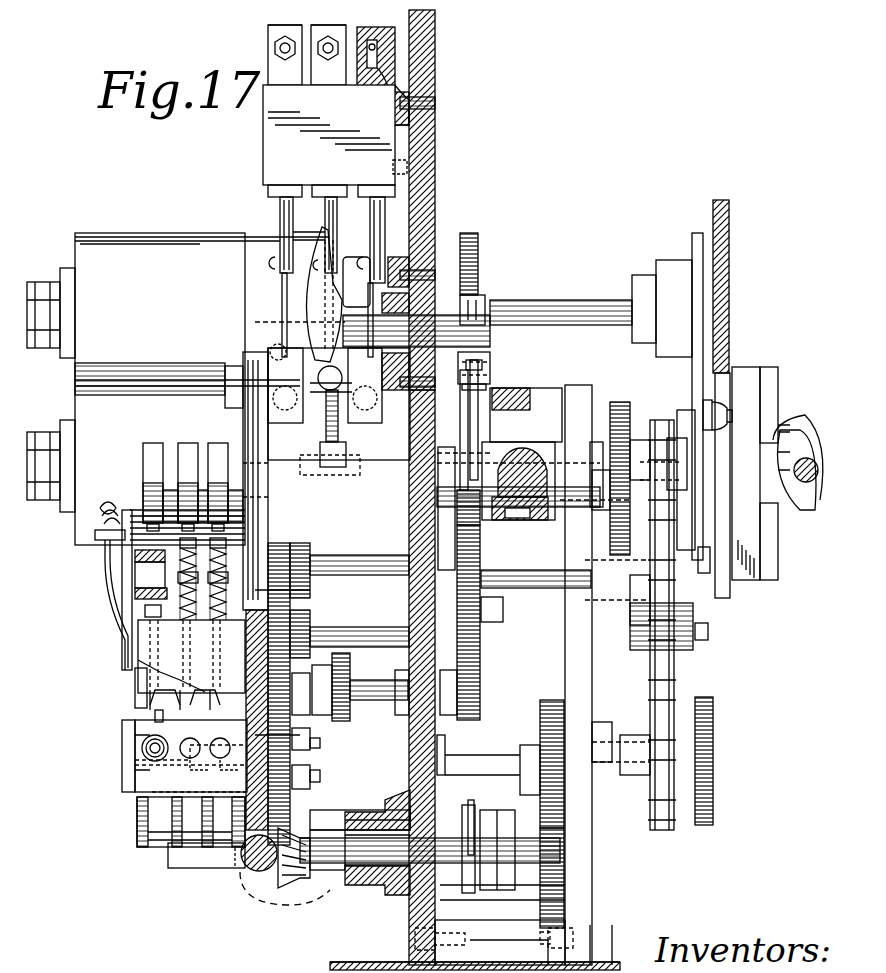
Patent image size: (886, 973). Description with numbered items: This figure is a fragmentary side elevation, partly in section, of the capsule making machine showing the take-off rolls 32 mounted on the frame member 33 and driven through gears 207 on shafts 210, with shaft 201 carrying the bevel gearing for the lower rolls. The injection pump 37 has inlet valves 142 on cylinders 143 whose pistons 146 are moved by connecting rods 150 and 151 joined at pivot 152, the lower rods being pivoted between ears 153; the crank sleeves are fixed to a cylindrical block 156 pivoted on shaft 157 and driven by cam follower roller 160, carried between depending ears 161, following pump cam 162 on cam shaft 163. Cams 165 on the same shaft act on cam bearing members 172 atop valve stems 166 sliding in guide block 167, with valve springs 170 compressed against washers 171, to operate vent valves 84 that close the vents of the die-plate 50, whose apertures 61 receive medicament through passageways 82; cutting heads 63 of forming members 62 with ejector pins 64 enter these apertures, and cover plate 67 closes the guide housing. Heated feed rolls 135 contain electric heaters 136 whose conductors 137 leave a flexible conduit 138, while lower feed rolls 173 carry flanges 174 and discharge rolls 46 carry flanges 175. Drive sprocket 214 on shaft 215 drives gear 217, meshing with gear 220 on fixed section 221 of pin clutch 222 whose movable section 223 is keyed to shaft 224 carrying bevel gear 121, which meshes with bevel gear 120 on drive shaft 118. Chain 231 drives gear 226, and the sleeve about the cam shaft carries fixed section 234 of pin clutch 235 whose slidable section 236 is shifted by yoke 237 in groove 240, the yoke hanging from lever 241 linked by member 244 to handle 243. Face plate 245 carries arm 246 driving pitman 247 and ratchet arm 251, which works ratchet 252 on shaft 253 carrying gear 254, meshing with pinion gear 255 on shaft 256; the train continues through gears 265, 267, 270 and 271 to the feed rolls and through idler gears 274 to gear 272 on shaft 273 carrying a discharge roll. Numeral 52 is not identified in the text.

The take-off rolls 32 is at (75, 383).
The frame member 33 is at (437, 70).
The injection pump 37 is at (270, 133).
The discharge rolls 46 is at (140, 825).
The die-plate 50 is at (150, 788).
The rack 52 is at (272, 535).
The capsule forming apertures 61 is at (200, 770).
The capsule forming and cutting members 62 is at (142, 745).
The cutting head 63 is at (148, 749).
The ejector pin 64 is at (160, 752).
The cover plate 67 is at (130, 768).
The passageways 82 is at (229, 770).
The vent valves 84 is at (222, 750).
The drive shaft 118 is at (262, 870).
The bevel gear 120 is at (252, 908).
The bevel gear 121 is at (283, 888).
The heated feed rolls 135 is at (135, 610).
The electric heaters 136 is at (122, 580).
The terminal conductors 137 is at (104, 562).
The flexible conduit 138 is at (100, 512).
The inlet valves 142 is at (290, 60).
The cylinders 143 is at (345, 12).
The pistons 146 is at (372, 88).
The connecting rods 150 is at (320, 212).
The lower connecting rods 151 is at (293, 322).
The pivot 152 is at (270, 263).
The ears 153 is at (350, 350).
The cylindrical block 156 is at (290, 352).
The shaft 157 is at (262, 358).
The cam follower roller 160 is at (340, 433).
The depending ears 161 is at (318, 425).
The pump cam 162 is at (320, 455).
The cam shaft 163 is at (404, 470).
The cams 165 is at (210, 432).
The valve stems 166 is at (228, 578).
The guide block 167 is at (168, 653).
The valve springs 170 is at (228, 560).
The washers 171 is at (228, 542).
The cam bearing members 172 is at (225, 528).
The lower feed rolls 173 is at (135, 683).
The flanges 174 is at (192, 750).
The flanges 175 is at (206, 855).
The shaft 201 is at (800, 432).
The gears 207 is at (478, 238).
The shafts 210 is at (590, 278).
The drive sprocket 214 is at (713, 752).
The shaft 215 is at (605, 730).
The gear 217 is at (540, 716).
The gear 220 is at (540, 905).
The fixed section 221 is at (505, 815).
The pin clutch 222 is at (492, 808).
The movable section 223 is at (472, 805).
The shaft 224 is at (333, 868).
The gear 226 is at (620, 405).
The chain 231 is at (676, 658).
The fixed clutch section 234 is at (548, 512).
The pin clutch 235 is at (522, 448).
The slidable clutch section 236 is at (503, 438).
The yoke 237 is at (468, 428).
The groove 240 is at (480, 522).
The lever 241 is at (487, 305).
The handle 243 is at (313, 293).
The member 244 is at (492, 340).
The face plate 245 is at (680, 452).
The arm 246 is at (690, 475).
The pitman 247 is at (703, 410).
The ratchet arm 251 is at (692, 378).
The ratchet 252 is at (700, 615).
The shaft 253 is at (515, 600).
The gear 254 is at (482, 645).
The pinion gear 255 is at (482, 683).
The shaft 256 is at (368, 700).
The gear 265 is at (352, 662).
The gear 267 is at (296, 677).
The gear 270 is at (298, 607).
The gear 271 is at (300, 548).
The gear 272 is at (300, 808).
The shaft 273 is at (370, 788).
The idler gears 274 is at (292, 775).